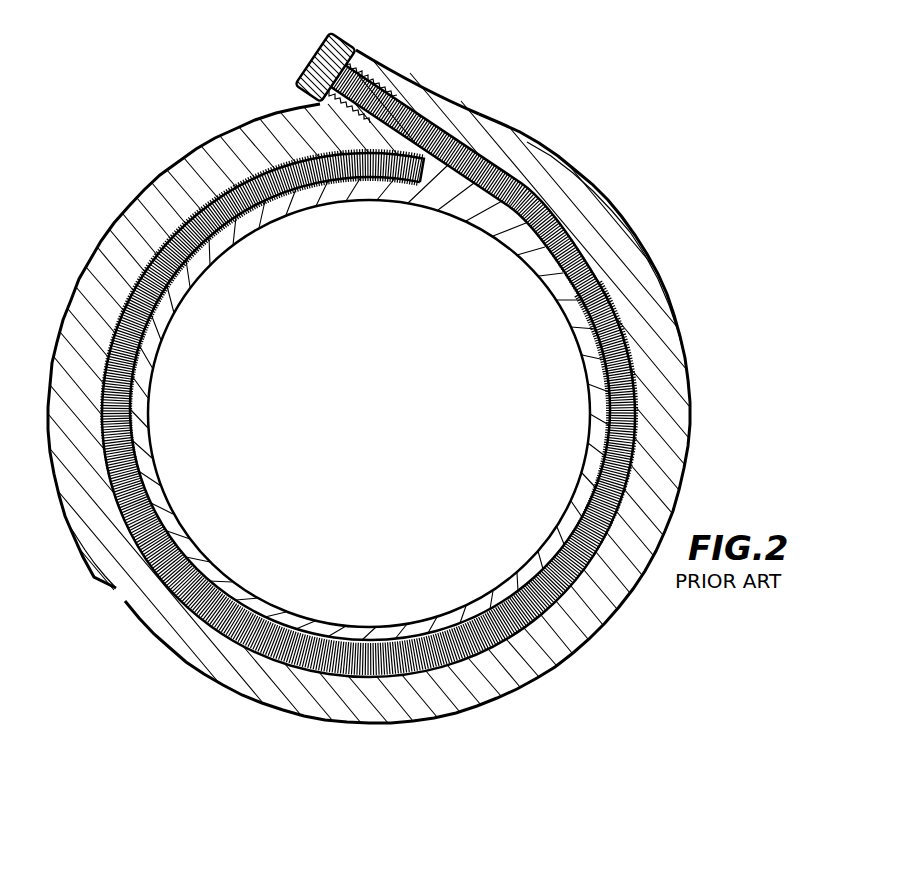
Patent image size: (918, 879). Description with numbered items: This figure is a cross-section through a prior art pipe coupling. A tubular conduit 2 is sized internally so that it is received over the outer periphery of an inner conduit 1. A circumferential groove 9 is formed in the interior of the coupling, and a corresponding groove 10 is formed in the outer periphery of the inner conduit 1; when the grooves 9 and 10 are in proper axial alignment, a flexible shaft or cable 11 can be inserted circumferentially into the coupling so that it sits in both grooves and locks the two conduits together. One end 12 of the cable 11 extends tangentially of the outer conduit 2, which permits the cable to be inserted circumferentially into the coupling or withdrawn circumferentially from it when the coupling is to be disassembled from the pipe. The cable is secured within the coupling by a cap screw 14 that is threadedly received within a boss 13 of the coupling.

The inner conduit 1 is at (590, 414).
The tubular conduit 2 is at (688, 371).
The circumferential groove 9 is at (630, 478).
The groove 10 is at (600, 477).
The flexible shaft or cable 11 is at (637, 448).
The end of the cable 12 is at (382, 78).
The boss 13 is at (368, 54).
The cap screw 14 is at (298, 67).